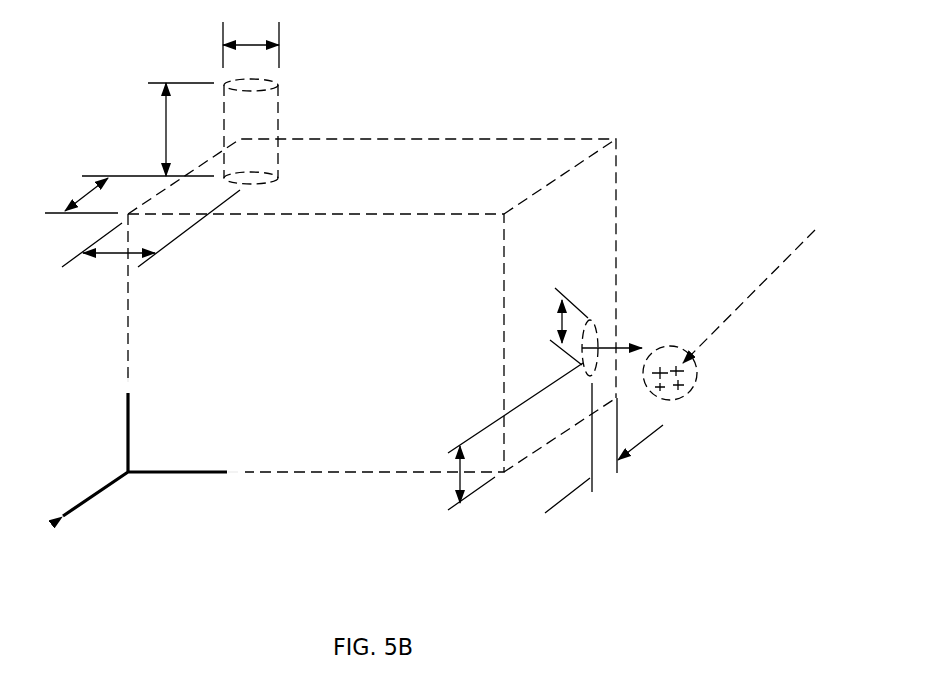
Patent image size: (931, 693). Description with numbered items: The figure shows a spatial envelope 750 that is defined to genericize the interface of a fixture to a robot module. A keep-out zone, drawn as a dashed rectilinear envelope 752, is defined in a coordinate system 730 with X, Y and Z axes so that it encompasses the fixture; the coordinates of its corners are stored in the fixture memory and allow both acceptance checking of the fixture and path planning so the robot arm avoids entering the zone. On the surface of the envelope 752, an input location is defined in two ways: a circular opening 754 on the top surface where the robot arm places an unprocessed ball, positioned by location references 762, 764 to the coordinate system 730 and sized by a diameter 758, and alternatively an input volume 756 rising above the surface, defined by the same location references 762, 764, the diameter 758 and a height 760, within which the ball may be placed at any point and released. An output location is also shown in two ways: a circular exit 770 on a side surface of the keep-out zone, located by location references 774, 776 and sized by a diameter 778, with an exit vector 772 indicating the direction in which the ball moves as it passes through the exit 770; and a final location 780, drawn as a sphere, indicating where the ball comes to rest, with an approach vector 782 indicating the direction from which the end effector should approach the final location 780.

The coordinate system 730 is at (78, 439).
The spatial envelope 750 is at (575, 78).
The keep-out zone envelope 752 is at (412, 145).
The circular opening 754 is at (267, 163).
The input volume 756 is at (270, 110).
The diameter 758 is at (251, 44).
The height 760 is at (148, 129).
The location reference 762 is at (75, 195).
The location reference 764 is at (151, 235).
The circular exit 770 is at (592, 307).
The exit vector 772 is at (607, 345).
The location reference 774 is at (515, 447).
The location reference 776 is at (604, 457).
The diameter 778 is at (554, 326).
The final location 780 is at (682, 373).
The approach vector 782 is at (749, 296).